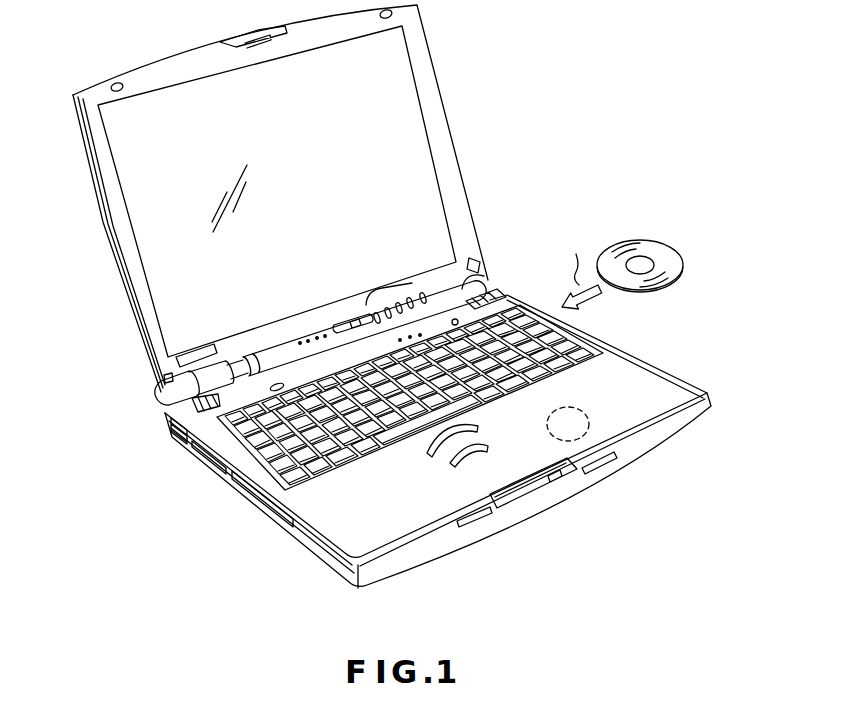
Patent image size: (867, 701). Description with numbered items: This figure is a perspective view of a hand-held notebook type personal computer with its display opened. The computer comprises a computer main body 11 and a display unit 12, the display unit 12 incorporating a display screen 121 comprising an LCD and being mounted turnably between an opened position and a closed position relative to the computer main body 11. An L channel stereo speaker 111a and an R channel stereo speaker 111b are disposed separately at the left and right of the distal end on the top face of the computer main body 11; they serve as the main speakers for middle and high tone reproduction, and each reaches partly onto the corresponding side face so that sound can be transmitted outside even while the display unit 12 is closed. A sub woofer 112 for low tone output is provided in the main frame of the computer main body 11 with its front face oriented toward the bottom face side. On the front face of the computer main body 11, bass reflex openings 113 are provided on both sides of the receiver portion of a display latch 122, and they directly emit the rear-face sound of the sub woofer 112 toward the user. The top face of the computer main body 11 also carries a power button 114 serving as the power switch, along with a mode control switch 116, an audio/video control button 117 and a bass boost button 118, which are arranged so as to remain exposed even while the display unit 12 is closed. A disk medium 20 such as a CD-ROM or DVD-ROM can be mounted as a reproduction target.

The computer main body 11 is at (660, 430).
The display unit 12 is at (439, 126).
The disk medium 20 is at (688, 278).
The L channel stereo speaker 111a is at (163, 407).
The R channel stereo speaker 111b is at (483, 283).
The sub woofer 112 is at (585, 412).
The bass reflex openings 113 is at (590, 472).
The power button 114 is at (190, 437).
The mode control switch 116 is at (357, 328).
The audio/video control button 117 is at (380, 288).
The bass boost button 118 is at (428, 297).
The display screen 121 is at (371, 82).
The display latch 122 is at (253, 31).